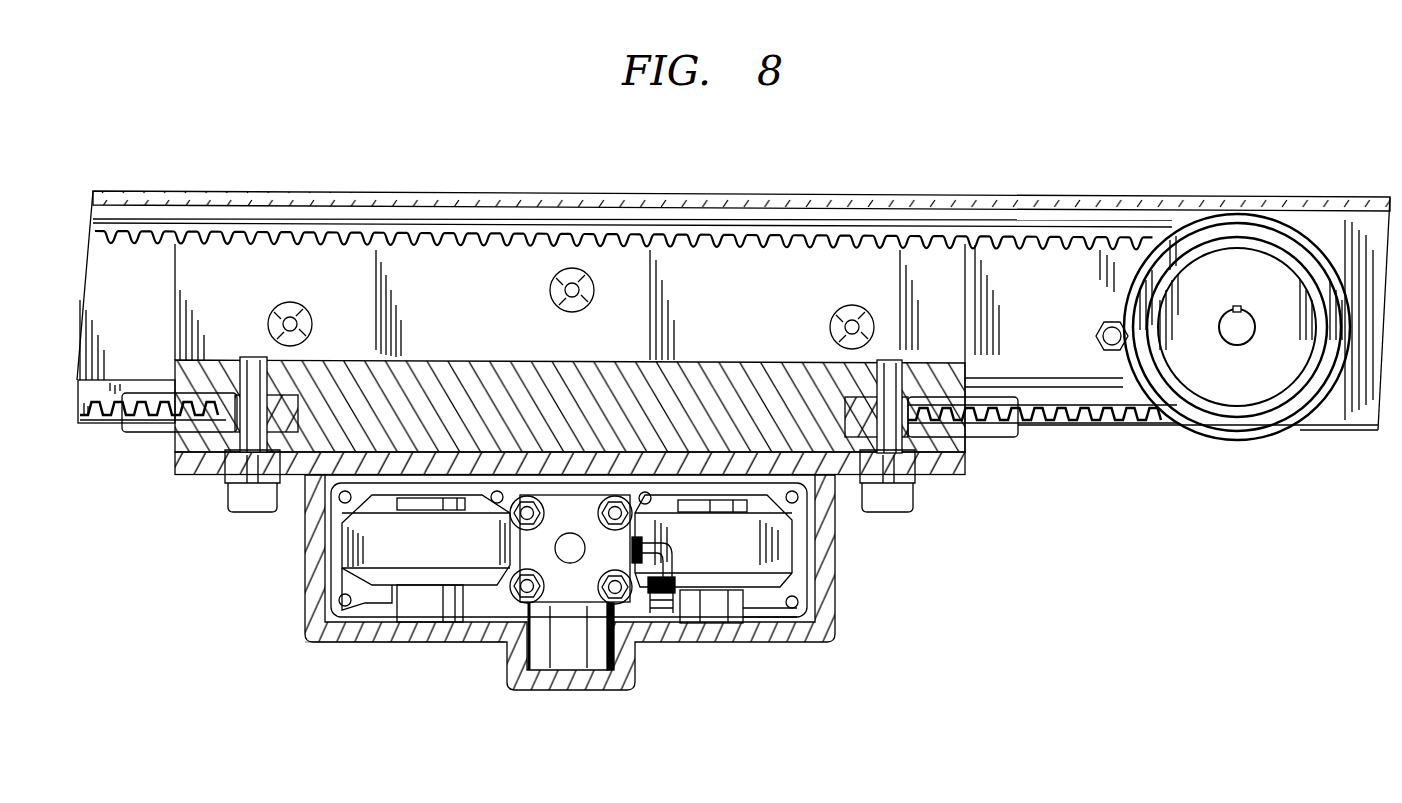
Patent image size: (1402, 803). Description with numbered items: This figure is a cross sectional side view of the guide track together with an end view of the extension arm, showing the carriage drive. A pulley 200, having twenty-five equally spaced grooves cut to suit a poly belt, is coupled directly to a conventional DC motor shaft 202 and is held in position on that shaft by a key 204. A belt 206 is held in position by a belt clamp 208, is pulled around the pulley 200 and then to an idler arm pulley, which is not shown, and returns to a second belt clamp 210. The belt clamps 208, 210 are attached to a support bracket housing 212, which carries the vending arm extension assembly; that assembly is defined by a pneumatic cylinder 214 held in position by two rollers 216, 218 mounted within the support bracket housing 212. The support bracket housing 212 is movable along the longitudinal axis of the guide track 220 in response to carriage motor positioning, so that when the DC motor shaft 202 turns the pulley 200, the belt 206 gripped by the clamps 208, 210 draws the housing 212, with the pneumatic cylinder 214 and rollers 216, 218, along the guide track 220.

The pulley 200 is at (1237, 432).
The DC motor shaft 202 is at (1243, 345).
The key 204 is at (1237, 309).
The belt 206 is at (1003, 235).
The belt clamp 208 is at (967, 438).
The second belt clamp 210 is at (160, 432).
The support bracket housing 212 is at (780, 640).
The pneumatic cylinder 214 is at (567, 587).
The roller 216 is at (342, 625).
The roller 218 is at (787, 558).
The guide track 220 is at (848, 193).